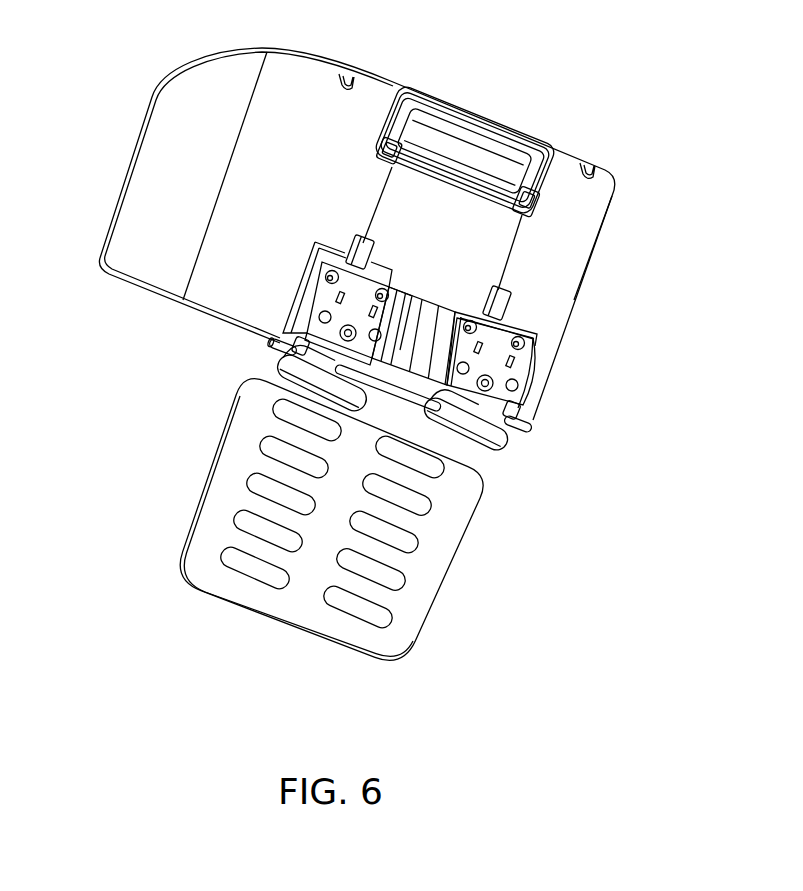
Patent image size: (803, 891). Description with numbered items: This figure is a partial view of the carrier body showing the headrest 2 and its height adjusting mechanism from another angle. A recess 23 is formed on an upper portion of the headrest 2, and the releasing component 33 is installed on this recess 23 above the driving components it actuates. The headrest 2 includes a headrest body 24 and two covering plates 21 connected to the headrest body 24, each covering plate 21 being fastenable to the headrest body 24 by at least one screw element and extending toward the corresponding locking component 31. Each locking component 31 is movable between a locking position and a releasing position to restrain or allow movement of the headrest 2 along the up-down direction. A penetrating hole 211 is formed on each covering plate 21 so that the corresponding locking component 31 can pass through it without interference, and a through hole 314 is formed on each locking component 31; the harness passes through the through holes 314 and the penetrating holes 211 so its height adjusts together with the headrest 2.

The headrest 2 is at (164, 69).
The covering plate 21 is at (383, 322).
The penetrating hole 211 is at (256, 366).
The recess 23 is at (487, 137).
The headrest body 24 is at (572, 247).
The locking component 31 is at (268, 353).
The through hole 314 is at (292, 333).
The releasing component 33 is at (450, 100).